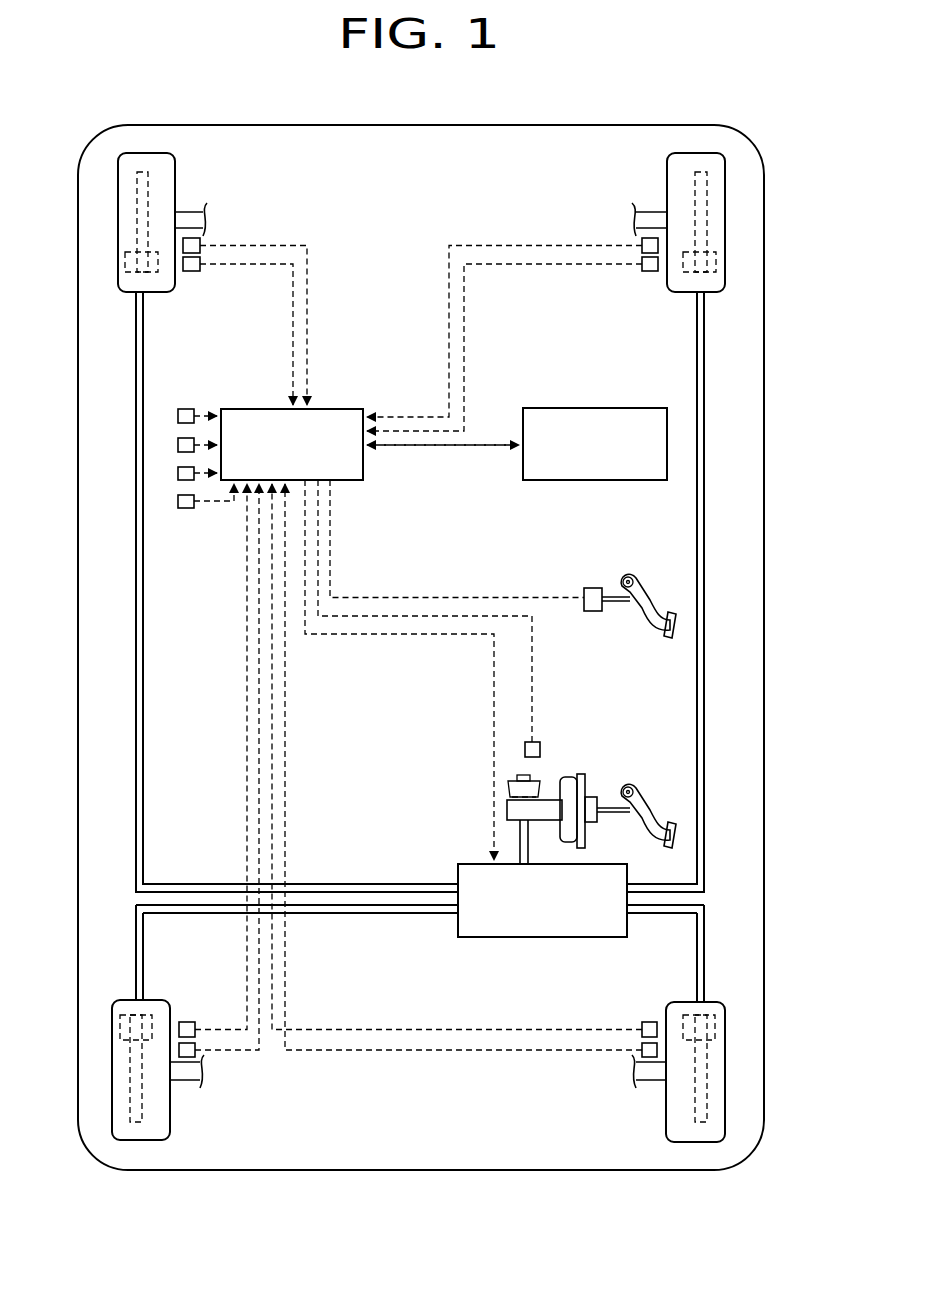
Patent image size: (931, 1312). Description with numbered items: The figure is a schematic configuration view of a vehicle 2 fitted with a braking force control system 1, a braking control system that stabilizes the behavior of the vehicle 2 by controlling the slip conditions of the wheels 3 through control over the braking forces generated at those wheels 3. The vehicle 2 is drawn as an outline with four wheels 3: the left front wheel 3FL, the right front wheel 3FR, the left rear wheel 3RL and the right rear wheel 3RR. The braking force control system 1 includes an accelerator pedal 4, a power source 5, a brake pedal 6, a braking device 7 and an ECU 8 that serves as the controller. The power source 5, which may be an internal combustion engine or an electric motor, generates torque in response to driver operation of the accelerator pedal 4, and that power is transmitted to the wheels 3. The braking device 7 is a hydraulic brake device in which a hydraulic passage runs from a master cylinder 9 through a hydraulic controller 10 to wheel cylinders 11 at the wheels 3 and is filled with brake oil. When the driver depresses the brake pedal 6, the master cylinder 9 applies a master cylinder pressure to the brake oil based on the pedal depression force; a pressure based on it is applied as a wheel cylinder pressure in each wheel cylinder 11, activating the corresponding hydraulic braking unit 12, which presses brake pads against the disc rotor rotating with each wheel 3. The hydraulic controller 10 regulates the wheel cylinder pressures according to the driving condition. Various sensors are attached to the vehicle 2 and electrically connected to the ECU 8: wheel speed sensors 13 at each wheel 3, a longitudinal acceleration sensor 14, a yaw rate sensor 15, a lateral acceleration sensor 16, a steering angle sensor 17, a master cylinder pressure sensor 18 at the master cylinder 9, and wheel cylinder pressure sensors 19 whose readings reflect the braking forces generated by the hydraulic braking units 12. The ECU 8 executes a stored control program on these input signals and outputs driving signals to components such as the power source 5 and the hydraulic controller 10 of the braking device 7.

The braking force control system 1 is at (397, 248).
The vehicle 2 is at (580, 104).
The wheels 3 is at (418, 647).
The left front wheel 3FL is at (184, 190).
The right front wheel 3FR is at (660, 190).
The left rear wheel 3RL is at (178, 1111).
The right rear wheel 3RR is at (660, 1111).
The accelerator pedal 4 is at (640, 582).
The power source 5 is at (631, 408).
The brake pedal 6 is at (640, 792).
The braking device 7 is at (716, 704).
The ECU 8 is at (325, 409).
The master cylinder 9 is at (546, 798).
The hydraulic controller 10 is at (586, 938).
The wheel cylinders 11 is at (133, 276).
The hydraulic braking units 12 is at (184, 162).
The wheel speed sensors 13 is at (192, 272).
The longitudinal acceleration sensor 14 is at (178, 416).
The yaw rate sensor 15 is at (178, 447).
The lateral acceleration sensor 16 is at (178, 474).
The steering angle sensor 17 is at (190, 508).
The master cylinder pressure sensor 18 is at (540, 745).
The wheel cylinder pressure sensors 19 is at (200, 241).